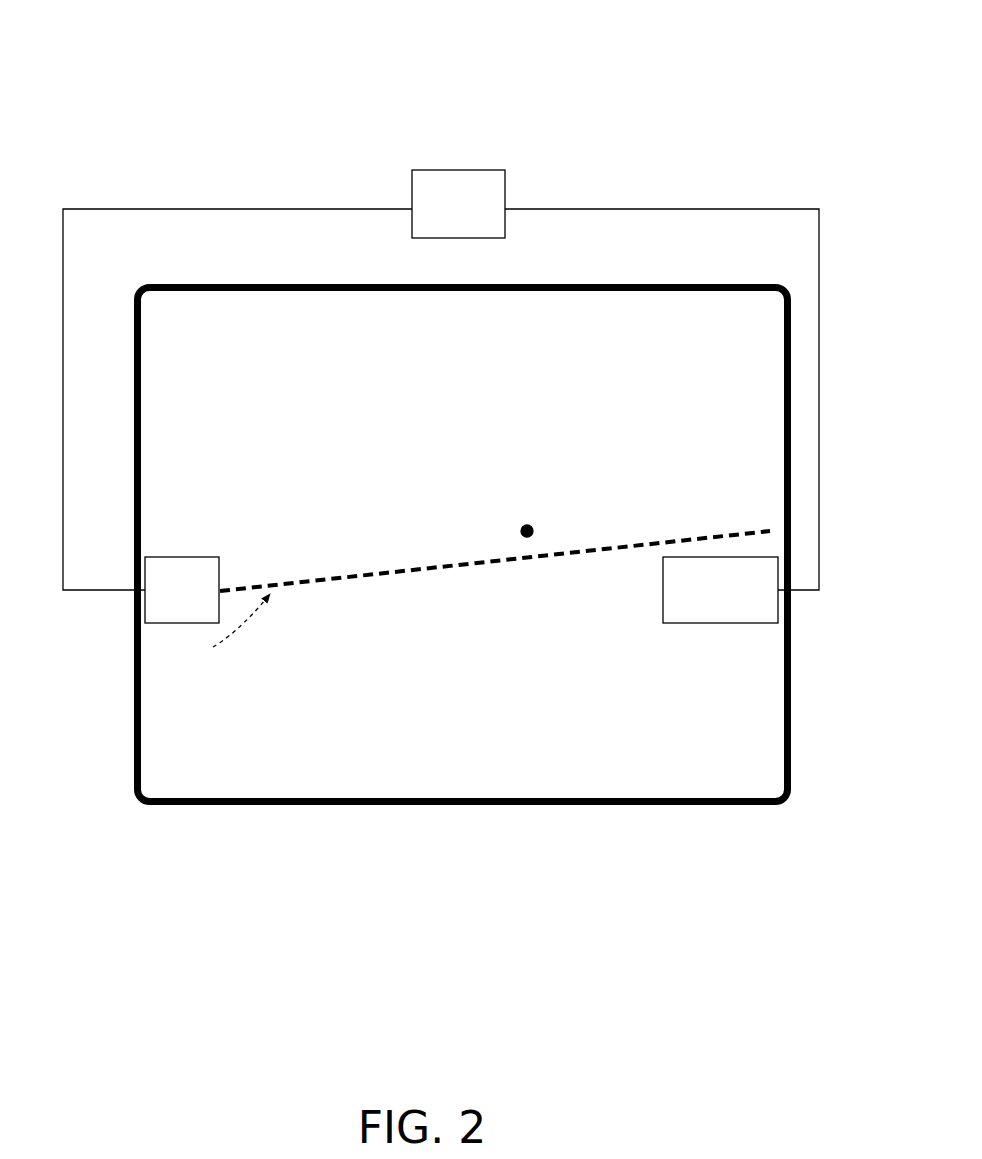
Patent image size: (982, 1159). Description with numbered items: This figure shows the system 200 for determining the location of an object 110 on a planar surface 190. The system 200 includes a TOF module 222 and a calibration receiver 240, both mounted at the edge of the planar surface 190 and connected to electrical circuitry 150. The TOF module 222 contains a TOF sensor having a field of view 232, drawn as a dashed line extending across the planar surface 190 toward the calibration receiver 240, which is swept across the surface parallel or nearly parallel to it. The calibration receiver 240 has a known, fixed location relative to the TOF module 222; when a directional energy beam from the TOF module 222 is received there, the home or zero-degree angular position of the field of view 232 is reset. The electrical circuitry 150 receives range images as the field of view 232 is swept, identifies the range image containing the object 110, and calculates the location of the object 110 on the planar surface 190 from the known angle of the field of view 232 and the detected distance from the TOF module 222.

The system 200 is at (741, 62).
The electrical circuitry 150 is at (458, 204).
The planar surface 190 is at (433, 810).
The TOF module 222 is at (207, 602).
The field of view 232 is at (420, 573).
The object 110 is at (521, 522).
The calibration receiver 240 is at (720, 590).